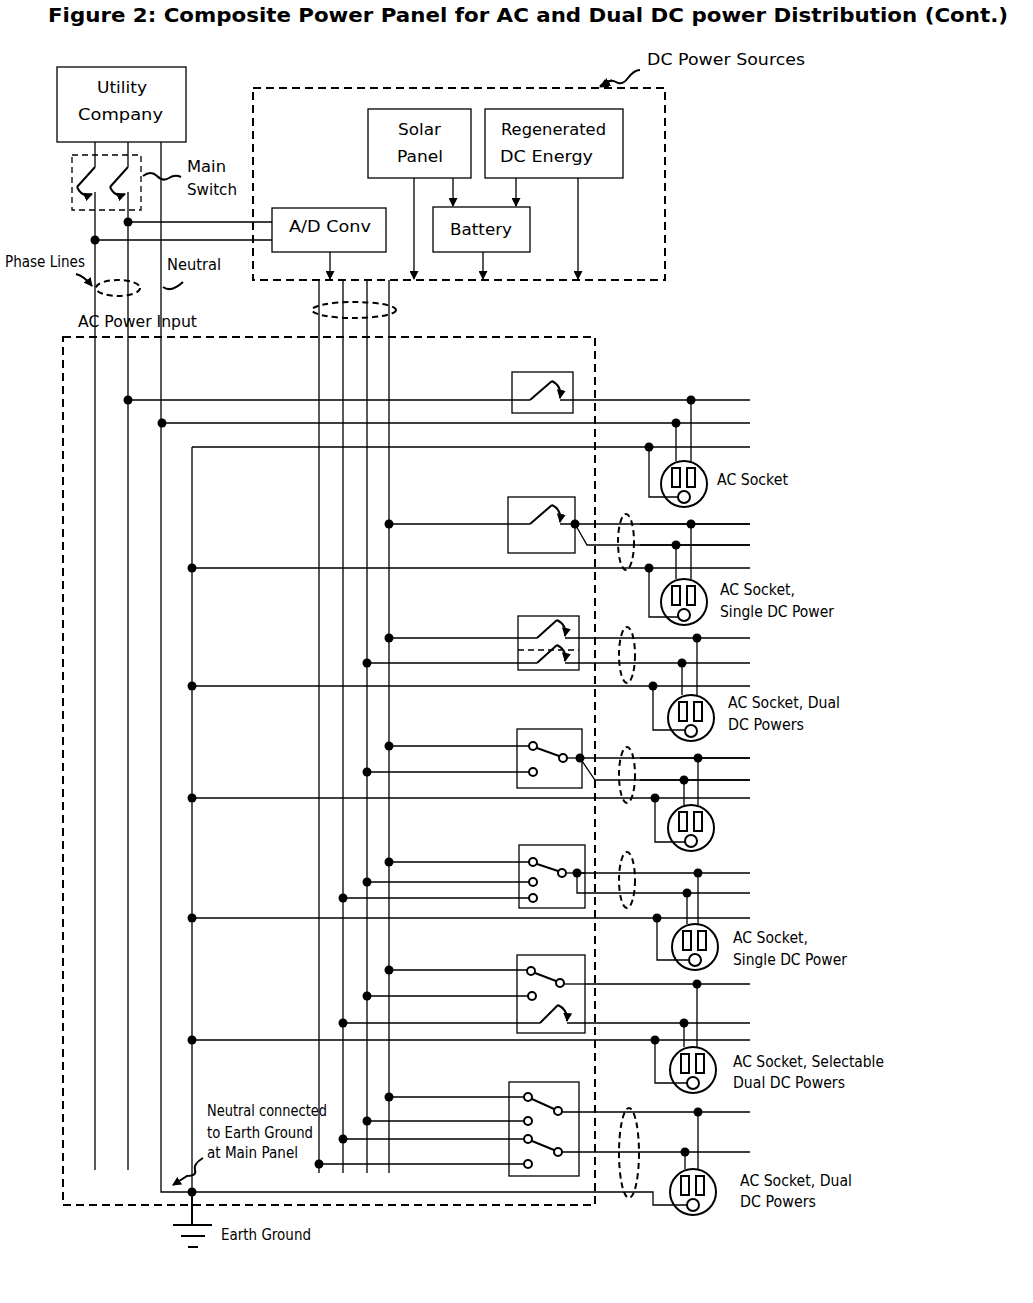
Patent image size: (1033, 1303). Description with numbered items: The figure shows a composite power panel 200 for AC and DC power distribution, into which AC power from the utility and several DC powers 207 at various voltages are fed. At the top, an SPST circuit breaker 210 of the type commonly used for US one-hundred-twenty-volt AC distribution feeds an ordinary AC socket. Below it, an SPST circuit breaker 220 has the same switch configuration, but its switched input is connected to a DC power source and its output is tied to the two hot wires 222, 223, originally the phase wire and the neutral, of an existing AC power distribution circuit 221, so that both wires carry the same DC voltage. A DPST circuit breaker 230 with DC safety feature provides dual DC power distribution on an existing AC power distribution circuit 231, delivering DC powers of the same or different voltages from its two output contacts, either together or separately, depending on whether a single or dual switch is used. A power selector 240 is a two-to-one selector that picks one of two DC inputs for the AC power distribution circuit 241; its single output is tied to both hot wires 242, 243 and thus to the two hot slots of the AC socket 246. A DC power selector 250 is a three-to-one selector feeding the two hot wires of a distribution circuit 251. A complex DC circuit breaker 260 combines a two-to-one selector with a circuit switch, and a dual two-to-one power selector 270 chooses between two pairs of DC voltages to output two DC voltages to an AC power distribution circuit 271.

The composite power panel 200 is at (610, 332).
The DC powers 207 is at (396, 309).
The SPST circuit breaker 210 is at (509, 381).
The SPST circuit breaker 220 is at (507, 499).
The AC power distribution circuit 221 is at (626, 572).
The hot wire 222 is at (766, 514).
The hot wire 223 is at (769, 541).
The DPST circuit breaker 230 is at (518, 621).
The AC power distribution circuit 231 is at (627, 688).
The power selector 240 is at (520, 735).
The AC power distribution circuit 241 is at (627, 805).
The hot wire 242 is at (727, 751).
The hot wire 243 is at (727, 773).
The AC socket 246 is at (716, 826).
The DC power selector 250 is at (522, 850).
The distribution circuit 251 is at (627, 913).
The complex DC circuit breaker 260 is at (516, 960).
The dual 2:1 power selector 270 is at (512, 1084).
The AC power distribution circuit 271 is at (629, 1199).